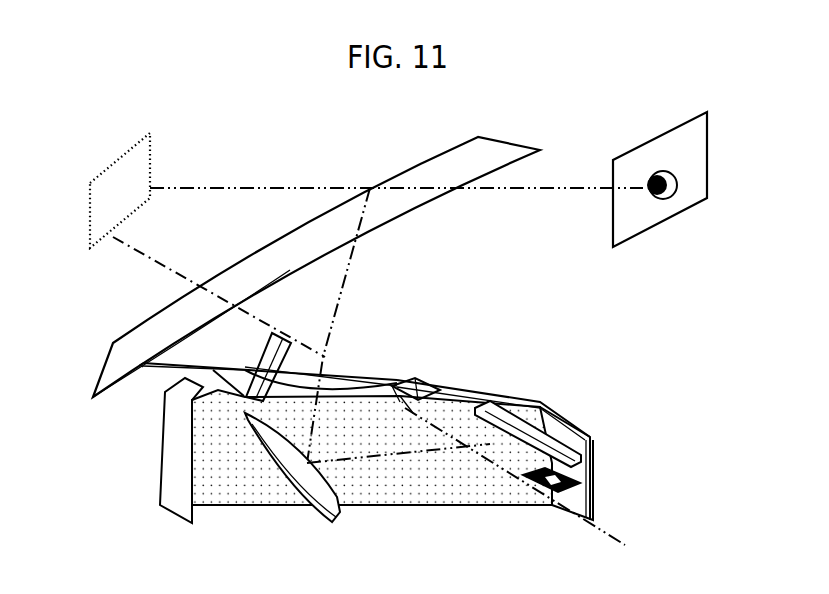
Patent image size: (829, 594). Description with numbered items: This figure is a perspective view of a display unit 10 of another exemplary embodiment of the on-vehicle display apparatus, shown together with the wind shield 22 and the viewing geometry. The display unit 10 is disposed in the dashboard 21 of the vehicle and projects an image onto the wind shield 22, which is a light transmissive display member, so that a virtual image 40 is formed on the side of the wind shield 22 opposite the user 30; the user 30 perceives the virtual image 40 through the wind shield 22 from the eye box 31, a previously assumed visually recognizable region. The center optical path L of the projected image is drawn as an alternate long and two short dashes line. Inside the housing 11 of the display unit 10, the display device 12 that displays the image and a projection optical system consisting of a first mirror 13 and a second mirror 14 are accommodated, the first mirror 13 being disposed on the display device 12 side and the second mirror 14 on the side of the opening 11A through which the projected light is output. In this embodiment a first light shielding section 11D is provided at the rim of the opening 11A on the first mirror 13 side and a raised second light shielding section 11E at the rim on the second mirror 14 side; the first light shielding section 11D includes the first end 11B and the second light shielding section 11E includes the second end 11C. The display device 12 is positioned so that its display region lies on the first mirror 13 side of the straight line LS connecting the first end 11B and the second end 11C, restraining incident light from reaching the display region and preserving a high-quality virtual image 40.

The display unit 10 is at (355, 414).
The housing 11 is at (170, 485).
The opening 11A is at (330, 380).
The first end 11B is at (415, 383).
The second end 11C is at (288, 341).
The first light shielding section 11D is at (447, 383).
The second light shielding section 11E is at (255, 358).
The display device 12 is at (563, 488).
The first mirror 13 is at (553, 447).
The second mirror 14 is at (317, 490).
The dashboard 21 is at (290, 270).
The wind shield 22 is at (422, 168).
The user 30 is at (650, 160).
The eye box 31 is at (708, 133).
The virtual image 40 is at (122, 155).
The center optical path L is at (352, 282).
The straight line LS is at (497, 462).